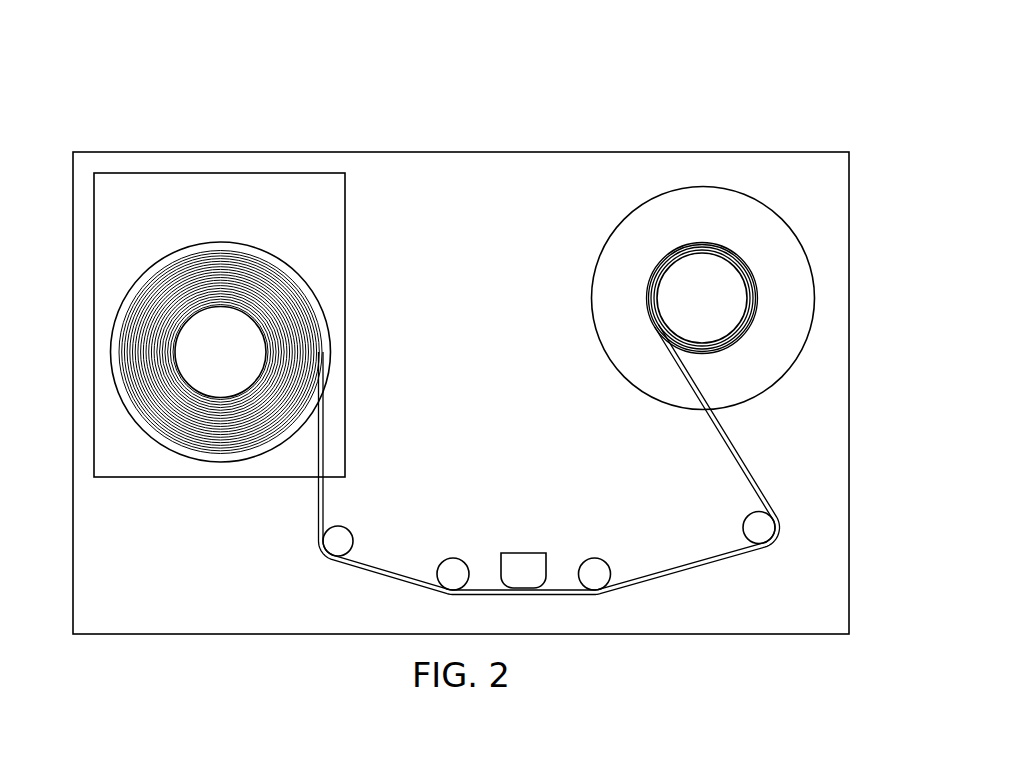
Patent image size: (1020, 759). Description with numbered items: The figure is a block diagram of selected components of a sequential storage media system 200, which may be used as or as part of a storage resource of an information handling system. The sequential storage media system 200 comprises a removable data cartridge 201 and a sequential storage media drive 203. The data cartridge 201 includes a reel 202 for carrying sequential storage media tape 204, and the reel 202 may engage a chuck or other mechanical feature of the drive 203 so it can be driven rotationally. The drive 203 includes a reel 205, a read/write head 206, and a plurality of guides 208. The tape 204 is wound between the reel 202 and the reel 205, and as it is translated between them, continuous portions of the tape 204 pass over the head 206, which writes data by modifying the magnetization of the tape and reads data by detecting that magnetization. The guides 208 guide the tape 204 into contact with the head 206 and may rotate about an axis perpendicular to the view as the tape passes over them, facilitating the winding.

The sequential storage media system 200 is at (595, 87).
The removable data cartridge 201 is at (355, 212).
The reel 202 is at (265, 357).
The sequential storage media drive 203 is at (300, 148).
The sequential storage media tape 204 is at (220, 250).
The reel 205 is at (747, 303).
The read/write head 206 is at (527, 560).
The guides 208 is at (330, 547).